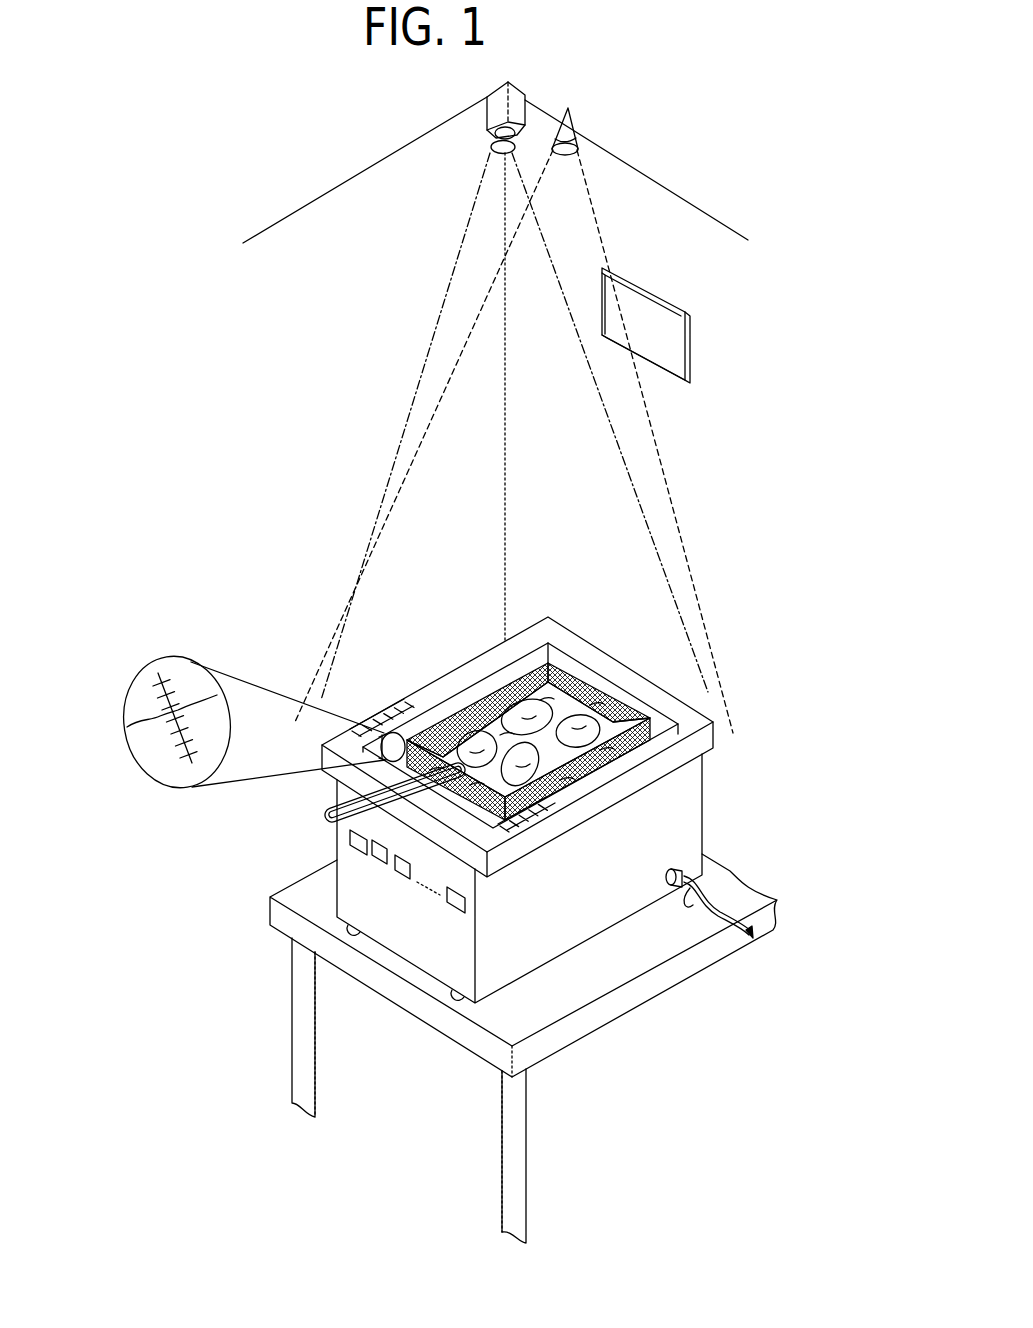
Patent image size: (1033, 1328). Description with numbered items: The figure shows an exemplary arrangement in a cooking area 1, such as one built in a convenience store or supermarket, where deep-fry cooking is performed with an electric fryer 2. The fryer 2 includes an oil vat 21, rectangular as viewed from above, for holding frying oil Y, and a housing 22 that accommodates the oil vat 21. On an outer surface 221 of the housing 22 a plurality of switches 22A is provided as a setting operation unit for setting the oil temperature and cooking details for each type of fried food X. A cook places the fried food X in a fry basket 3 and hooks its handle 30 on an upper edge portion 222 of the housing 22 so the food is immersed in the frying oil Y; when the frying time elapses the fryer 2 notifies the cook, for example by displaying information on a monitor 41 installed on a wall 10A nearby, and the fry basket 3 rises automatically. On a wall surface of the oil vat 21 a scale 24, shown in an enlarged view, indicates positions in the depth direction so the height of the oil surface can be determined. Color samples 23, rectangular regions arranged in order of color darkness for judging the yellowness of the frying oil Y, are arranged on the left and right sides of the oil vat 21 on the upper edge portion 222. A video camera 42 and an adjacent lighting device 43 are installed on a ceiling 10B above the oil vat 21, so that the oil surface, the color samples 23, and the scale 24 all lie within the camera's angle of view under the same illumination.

The cooking area 1 is at (174, 230).
The electric fryer 2 is at (756, 677).
The fry basket 3 is at (412, 722).
The wall 10A is at (735, 447).
The ceiling 10B is at (290, 208).
The oil vat 21 is at (463, 696).
The housing 22 is at (545, 907).
The switches 22A is at (383, 858).
The outer surface 221 is at (447, 967).
The upper edge portion 222 is at (497, 860).
The color sample 23 is at (378, 724).
The scale 24 is at (144, 688).
The handle 30 is at (327, 819).
The monitor 41 is at (661, 290).
The video camera 42 is at (487, 128).
The lighting device 43 is at (578, 127).
The fried food X is at (583, 727).
The frying oil Y is at (453, 742).